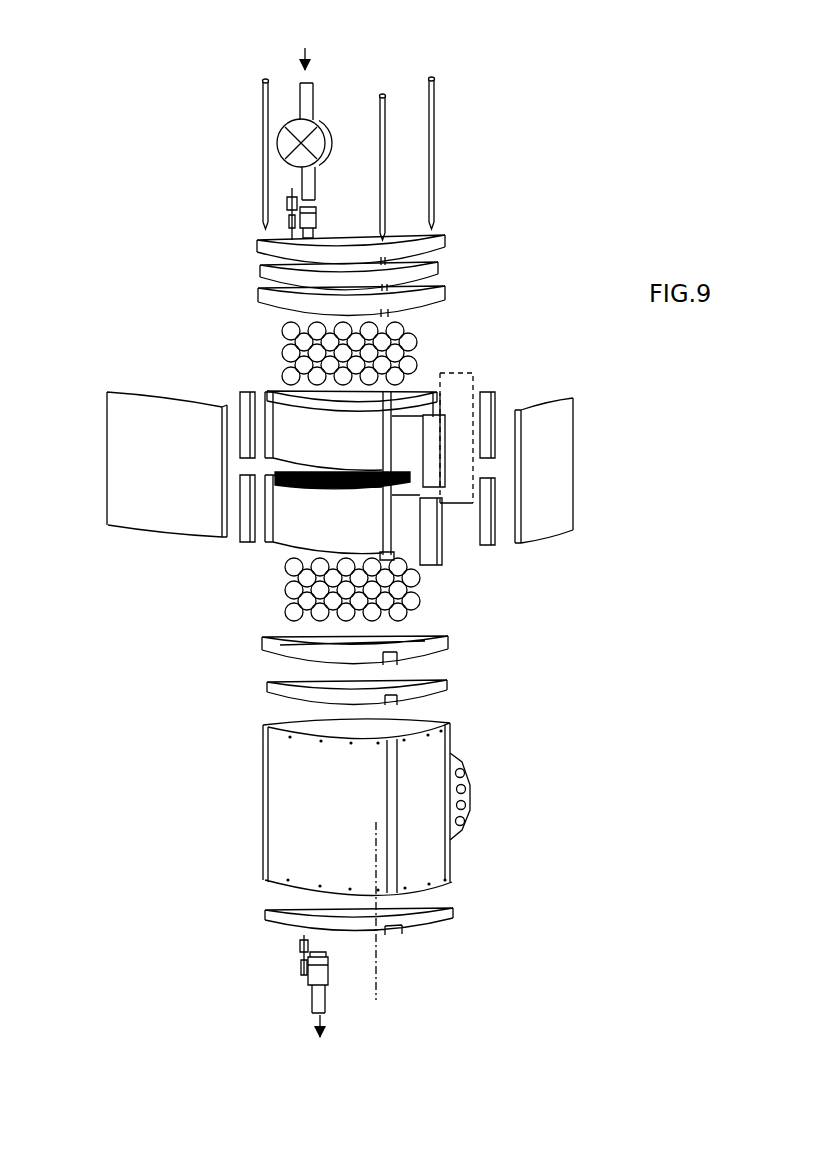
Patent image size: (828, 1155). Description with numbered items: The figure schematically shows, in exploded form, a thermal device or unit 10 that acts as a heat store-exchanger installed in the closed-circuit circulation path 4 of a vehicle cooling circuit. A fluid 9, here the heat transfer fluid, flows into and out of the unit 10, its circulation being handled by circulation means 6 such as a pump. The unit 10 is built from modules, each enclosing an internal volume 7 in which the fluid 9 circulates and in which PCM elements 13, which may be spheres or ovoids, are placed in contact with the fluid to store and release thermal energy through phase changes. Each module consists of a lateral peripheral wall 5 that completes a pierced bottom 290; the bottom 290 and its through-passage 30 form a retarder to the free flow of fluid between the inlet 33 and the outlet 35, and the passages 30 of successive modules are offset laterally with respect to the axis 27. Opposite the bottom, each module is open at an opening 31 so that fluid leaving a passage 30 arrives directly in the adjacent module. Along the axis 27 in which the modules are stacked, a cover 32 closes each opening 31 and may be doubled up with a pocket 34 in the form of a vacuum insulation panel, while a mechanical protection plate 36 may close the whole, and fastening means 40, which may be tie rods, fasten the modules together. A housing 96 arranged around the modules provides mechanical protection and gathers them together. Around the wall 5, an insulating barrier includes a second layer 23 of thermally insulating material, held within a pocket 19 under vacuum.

The closed-circuit circulation path 4 is at (322, 998).
The lateral peripheral wall 5 is at (325, 469).
The circulation means 6 is at (323, 118).
The internal volume 7 is at (301, 465).
The fluid 9 is at (307, 54).
The thermal device or unit 10 is at (658, 172).
The PCM elements 13 is at (413, 323).
The pocket 19 is at (167, 510).
The second layer 23 is at (130, 478).
The axis 27 is at (378, 985).
The through-passage 30 is at (397, 480).
The opening 31 is at (413, 388).
The cover 32 is at (263, 300).
The inlet 33 is at (342, 205).
The pocket 34 is at (260, 265).
The outlet 35 is at (305, 963).
The mechanical protection plate 36 is at (257, 243).
The fastening means 40 is at (263, 102).
The housing 96 is at (295, 808).
The bottom 290 is at (302, 473).